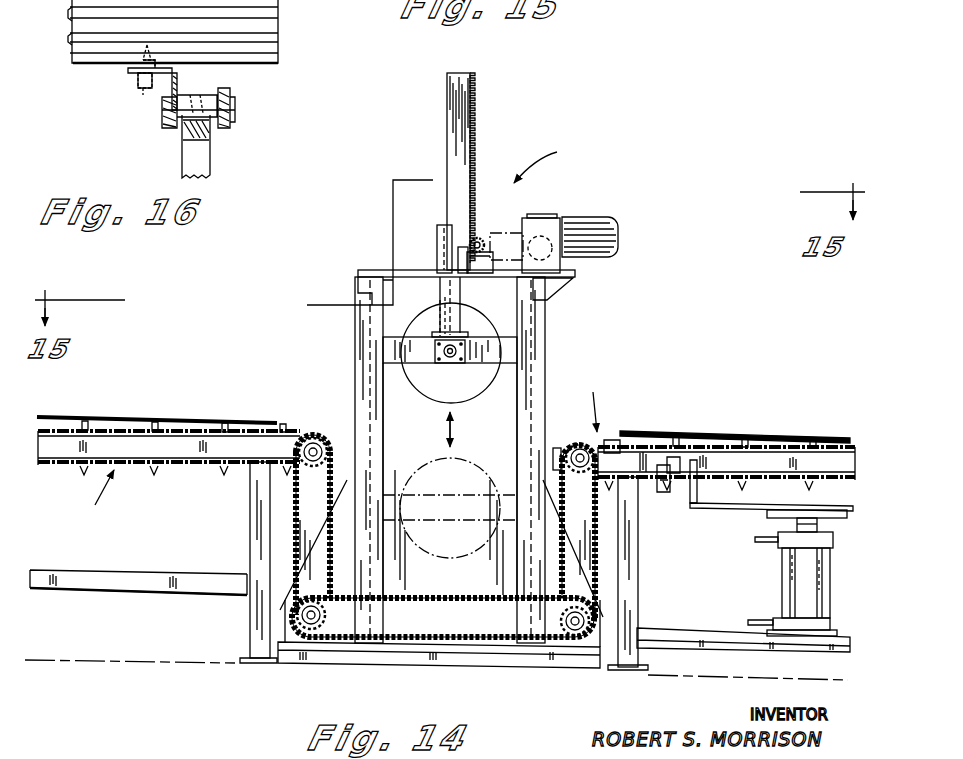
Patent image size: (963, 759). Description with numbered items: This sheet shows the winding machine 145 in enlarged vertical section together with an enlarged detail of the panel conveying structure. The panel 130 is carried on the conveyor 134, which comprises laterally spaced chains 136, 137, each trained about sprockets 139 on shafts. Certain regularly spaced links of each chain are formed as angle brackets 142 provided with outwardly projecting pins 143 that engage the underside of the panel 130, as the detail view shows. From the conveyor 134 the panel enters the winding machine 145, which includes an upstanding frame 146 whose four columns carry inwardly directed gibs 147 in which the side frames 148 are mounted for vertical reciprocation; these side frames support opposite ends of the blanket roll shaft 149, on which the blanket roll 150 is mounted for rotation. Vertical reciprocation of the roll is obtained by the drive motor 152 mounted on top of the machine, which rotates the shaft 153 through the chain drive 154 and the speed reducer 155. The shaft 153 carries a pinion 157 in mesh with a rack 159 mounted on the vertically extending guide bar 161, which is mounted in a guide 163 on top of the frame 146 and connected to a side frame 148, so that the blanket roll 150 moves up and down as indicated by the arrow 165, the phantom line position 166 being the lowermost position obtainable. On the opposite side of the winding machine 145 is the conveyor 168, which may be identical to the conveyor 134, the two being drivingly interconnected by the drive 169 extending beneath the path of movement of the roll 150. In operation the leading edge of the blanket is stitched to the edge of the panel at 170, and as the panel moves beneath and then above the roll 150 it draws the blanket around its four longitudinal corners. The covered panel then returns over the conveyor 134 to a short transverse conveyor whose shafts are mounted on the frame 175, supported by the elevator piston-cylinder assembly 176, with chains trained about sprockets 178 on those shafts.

In FIG. 16, the panel 130 is at (280, 25).
In FIG. 14, the panel 130 is at (743, 432).
In FIG. 14, the conveyor 134 is at (595, 401).
In FIG. 16, the chain 136 is at (222, 88).
In FIG. 14, the chain 137 is at (716, 482).
In FIG. 16, the sprocket 139 is at (207, 158).
In FIG. 14, the sprocket 139 is at (578, 442).
In FIG. 16, the angle bracket 142 is at (175, 74).
In FIG. 14, the angle bracket 142 is at (608, 438).
In FIG. 16, the pin 143 is at (133, 68).
In FIG. 14, the winding machine 145 is at (554, 163).
In FIG. 14, the upstanding frame 146 is at (545, 337).
In FIG. 14, the gib 147 is at (370, 385).
In FIG. 14, the side frame 148 is at (385, 350).
In FIG. 14, the blanket roll shaft 149 is at (451, 364).
In FIG. 14, the blanket roll 150 is at (416, 384).
In FIG. 14, the drive motor 152 is at (606, 222).
In FIG. 14, the shaft 153 is at (478, 237).
In FIG. 14, the chain drive 154 is at (503, 218).
In FIG. 14, the speed reducer 155 is at (546, 222).
In FIG. 14, the pinion 157 is at (478, 255).
In FIG. 14, the rack 159 is at (473, 122).
In FIG. 14, the guide bar 161 is at (446, 120).
In FIG. 14, the guide 163 is at (438, 237).
In FIG. 14, the arrow 165 is at (458, 424).
In FIG. 14, the phantom line position 166 is at (494, 545).
In FIG. 14, the conveyor 168 is at (168, 472).
In FIG. 14, the drive 169 is at (457, 660).
In FIG. 14, the stitching 170 is at (622, 430).
In FIG. 14, the frame 175 is at (743, 518).
In FIG. 14, the elevator piston-cylinder assembly 176 is at (780, 580).
In FIG. 14, the sprocket 178 is at (670, 492).